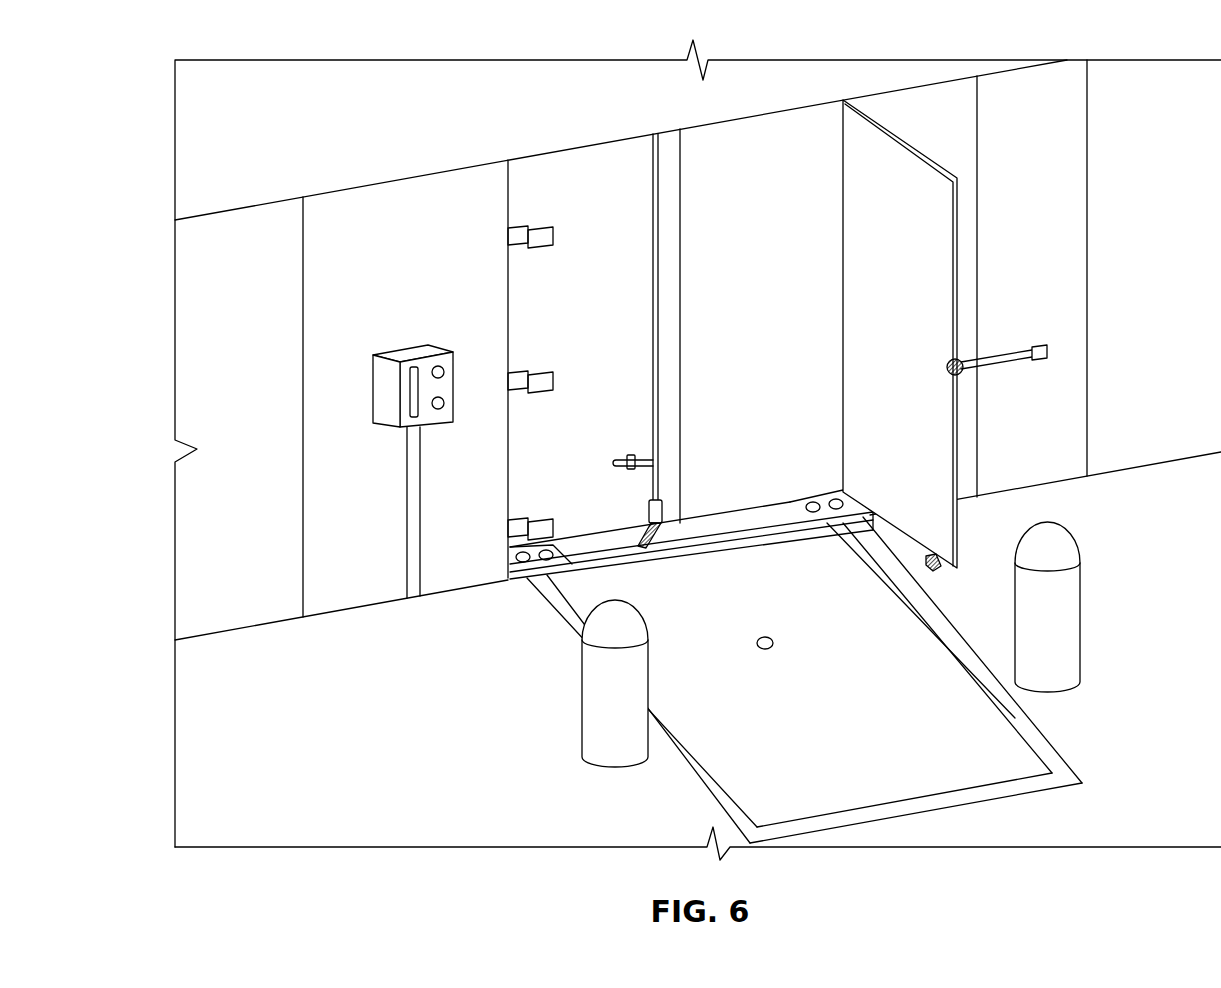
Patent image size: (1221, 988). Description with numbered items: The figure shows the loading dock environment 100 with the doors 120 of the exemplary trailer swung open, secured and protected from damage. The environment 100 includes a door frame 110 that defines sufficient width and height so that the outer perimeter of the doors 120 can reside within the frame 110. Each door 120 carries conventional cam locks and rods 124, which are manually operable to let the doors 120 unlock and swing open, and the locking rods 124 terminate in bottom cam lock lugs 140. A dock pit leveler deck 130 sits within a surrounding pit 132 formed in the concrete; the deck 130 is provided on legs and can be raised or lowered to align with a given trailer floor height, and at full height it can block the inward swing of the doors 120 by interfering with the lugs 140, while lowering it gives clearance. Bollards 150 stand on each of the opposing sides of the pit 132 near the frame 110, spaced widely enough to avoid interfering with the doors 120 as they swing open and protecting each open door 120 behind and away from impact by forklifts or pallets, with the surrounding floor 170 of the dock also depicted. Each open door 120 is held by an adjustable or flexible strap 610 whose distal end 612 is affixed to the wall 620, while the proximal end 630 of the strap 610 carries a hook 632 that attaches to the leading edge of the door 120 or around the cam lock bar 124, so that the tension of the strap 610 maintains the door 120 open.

The loading dock environment 100 is at (508, 606).
The door frame 110 is at (504, 491).
The doors 120 is at (574, 383).
The cam locks and rods 124 is at (661, 498).
The dock pit leveler deck 130 is at (804, 682).
The pit 132 is at (939, 818).
The bottom cam lock lugs 140 is at (661, 526).
The bollards 150 is at (596, 698).
The floor 170 is at (538, 816).
The strap 610 is at (998, 351).
The distal end 612 is at (1040, 362).
The wall 620 is at (1074, 370).
The proximal end 630 is at (922, 389).
The hook 632 is at (950, 375).